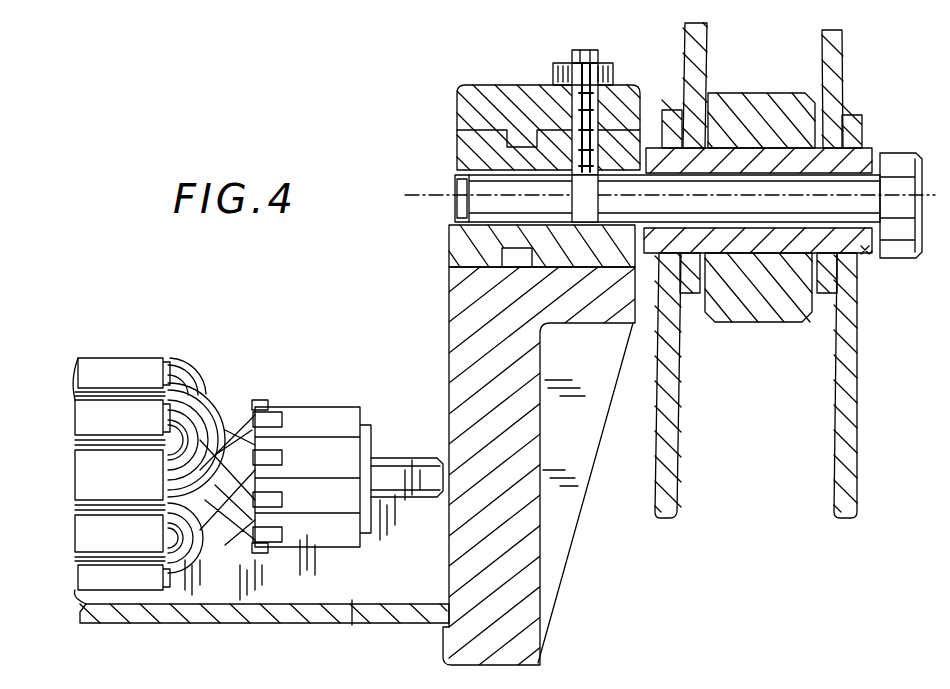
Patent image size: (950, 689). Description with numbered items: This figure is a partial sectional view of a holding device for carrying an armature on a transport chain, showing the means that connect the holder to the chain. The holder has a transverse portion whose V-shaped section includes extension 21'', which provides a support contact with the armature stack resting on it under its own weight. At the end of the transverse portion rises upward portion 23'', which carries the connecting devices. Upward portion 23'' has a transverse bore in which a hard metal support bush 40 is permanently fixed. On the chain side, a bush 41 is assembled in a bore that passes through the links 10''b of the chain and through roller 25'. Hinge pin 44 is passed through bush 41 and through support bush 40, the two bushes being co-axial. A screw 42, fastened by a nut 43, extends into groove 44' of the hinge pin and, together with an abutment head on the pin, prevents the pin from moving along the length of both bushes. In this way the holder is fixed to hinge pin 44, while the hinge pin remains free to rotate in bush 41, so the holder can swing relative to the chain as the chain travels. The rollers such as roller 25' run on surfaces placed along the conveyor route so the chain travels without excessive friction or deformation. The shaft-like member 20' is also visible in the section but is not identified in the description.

The support bush 40 is at (462, 140).
The shaft 20' is at (670, 204).
The screw 42 is at (597, 48).
The nut 43 is at (558, 75).
The roller 25' is at (760, 181).
The hinge pin 44 is at (760, 163).
The bush 41 is at (866, 254).
The groove 44' is at (589, 269).
The links 10''b is at (770, 298).
The extension 21'' is at (264, 633).
The upward portion 23'' is at (539, 445).